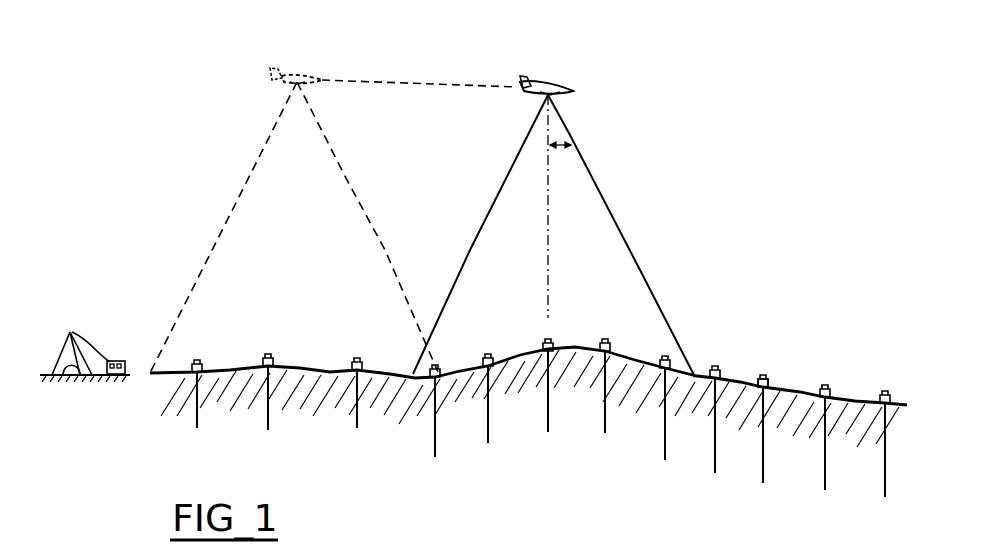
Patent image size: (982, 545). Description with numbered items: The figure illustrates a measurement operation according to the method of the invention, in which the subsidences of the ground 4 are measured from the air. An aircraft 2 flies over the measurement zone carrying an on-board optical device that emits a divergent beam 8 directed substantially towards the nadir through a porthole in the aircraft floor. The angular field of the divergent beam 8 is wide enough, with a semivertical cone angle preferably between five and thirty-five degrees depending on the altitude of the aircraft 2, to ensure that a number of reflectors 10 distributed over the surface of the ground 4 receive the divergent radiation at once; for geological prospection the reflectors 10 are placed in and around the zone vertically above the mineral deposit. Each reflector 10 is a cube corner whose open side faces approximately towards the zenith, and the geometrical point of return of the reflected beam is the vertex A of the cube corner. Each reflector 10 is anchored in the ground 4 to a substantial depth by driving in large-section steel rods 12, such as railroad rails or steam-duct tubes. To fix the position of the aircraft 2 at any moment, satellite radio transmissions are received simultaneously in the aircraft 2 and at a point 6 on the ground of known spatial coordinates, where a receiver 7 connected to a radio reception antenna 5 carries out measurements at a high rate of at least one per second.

The aircraft 2 is at (567, 87).
The ground 4 is at (855, 403).
The radio reception antenna 5 is at (70, 332).
The point on the ground 6 is at (87, 325).
The receiver 7 is at (113, 360).
The divergent beam 8 is at (602, 250).
The reflector 10 is at (765, 385).
The steel rod 12 is at (665, 447).
The vertex of the cube corner A is at (272, 367).